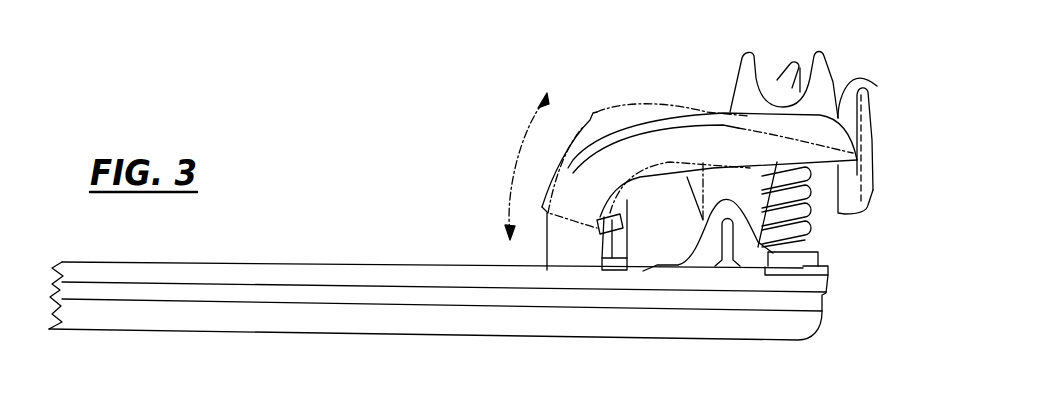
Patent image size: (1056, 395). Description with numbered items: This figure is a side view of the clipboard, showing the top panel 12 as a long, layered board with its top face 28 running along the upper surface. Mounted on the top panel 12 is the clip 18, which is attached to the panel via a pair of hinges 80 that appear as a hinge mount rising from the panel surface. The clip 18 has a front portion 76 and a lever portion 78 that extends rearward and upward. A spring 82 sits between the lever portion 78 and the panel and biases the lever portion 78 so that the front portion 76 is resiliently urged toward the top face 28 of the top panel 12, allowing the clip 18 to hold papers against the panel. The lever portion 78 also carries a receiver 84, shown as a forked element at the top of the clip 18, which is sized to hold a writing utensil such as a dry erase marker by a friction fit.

The top panel 12 is at (305, 262).
The top face 28 is at (412, 267).
The front portion 76 is at (545, 250).
The receiver 84 is at (757, 68).
The lever portion 78 is at (852, 82).
The clip 18 is at (857, 207).
The spring 82 is at (812, 223).
The hinges 80 is at (820, 260).